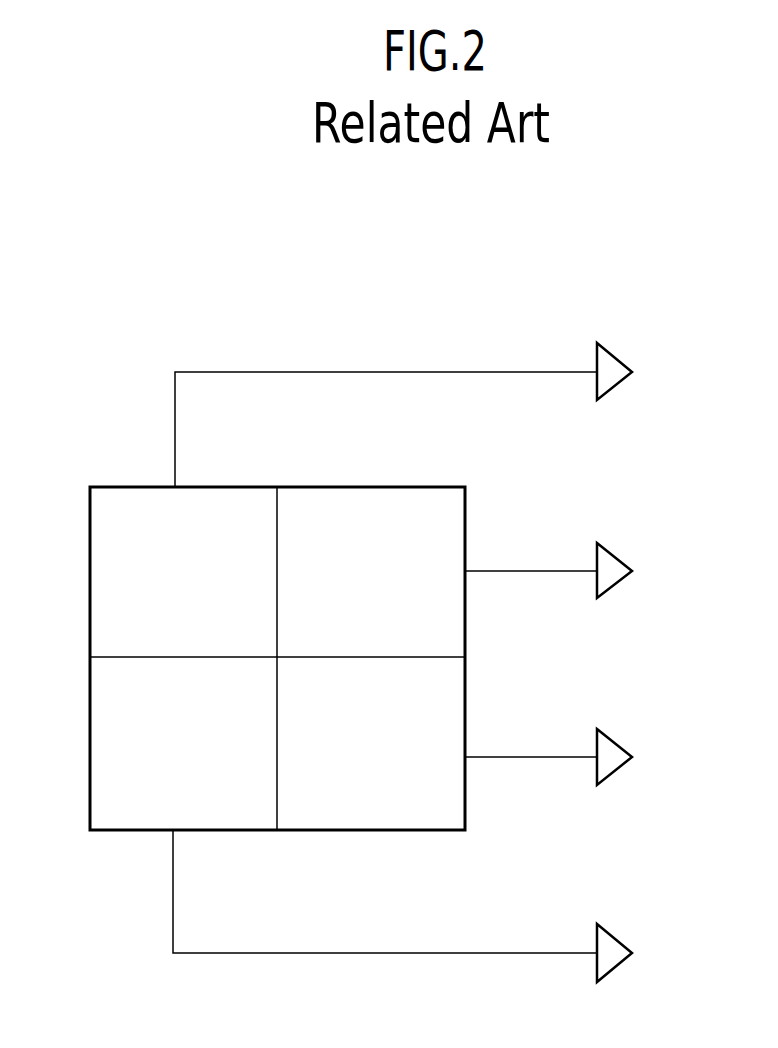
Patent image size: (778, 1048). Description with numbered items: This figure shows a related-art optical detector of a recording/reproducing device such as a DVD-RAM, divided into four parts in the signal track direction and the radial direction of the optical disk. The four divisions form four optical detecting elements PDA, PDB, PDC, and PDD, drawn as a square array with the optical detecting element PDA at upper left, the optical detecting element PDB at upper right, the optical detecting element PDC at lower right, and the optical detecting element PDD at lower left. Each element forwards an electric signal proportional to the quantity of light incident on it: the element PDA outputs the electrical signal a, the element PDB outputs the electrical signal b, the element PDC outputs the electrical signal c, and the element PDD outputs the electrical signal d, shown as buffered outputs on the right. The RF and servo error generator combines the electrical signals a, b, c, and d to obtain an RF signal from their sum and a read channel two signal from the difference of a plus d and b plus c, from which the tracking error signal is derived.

The optical detecting element PDA is at (184, 572).
The optical detecting element PDB is at (371, 572).
The optical detecting element PDC is at (371, 743).
The optical detecting element PDD is at (184, 743).
The electrical signal a is at (425, 415).
The electrical signal b is at (567, 570).
The electrical signal c is at (568, 757).
The electrical signal d is at (425, 906).